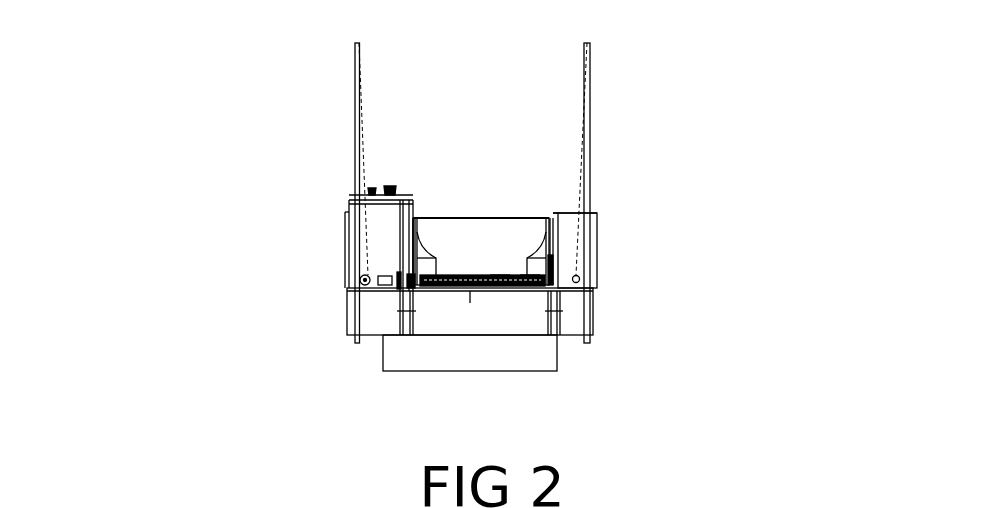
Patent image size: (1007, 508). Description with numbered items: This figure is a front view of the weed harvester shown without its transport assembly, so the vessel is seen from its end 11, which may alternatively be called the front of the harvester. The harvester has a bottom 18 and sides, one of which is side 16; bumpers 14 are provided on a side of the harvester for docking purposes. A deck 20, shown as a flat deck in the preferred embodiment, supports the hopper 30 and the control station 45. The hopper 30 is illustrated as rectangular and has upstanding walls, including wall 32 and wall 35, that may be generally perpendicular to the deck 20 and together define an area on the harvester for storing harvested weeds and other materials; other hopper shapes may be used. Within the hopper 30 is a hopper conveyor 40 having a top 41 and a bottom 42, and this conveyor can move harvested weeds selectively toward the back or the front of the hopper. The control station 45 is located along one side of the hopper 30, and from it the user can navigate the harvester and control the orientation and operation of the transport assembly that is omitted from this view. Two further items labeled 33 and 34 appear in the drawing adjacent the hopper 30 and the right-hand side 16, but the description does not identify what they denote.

The end 11 is at (365, 313).
The bumpers 14 is at (350, 307).
The side 16 is at (593, 298).
The bottom 18 is at (628, 228).
The deck 20 is at (365, 278).
The hopper 30 is at (483, 272).
The upstanding wall 32 is at (472, 228).
The hopper wall 33 is at (426, 217).
The frame top 34 is at (553, 212).
The upstanding wall 35 is at (383, 371).
The hopper conveyor 40 is at (528, 270).
The top 41 is at (500, 272).
The bottom 42 is at (487, 287).
The control station 45 is at (373, 190).